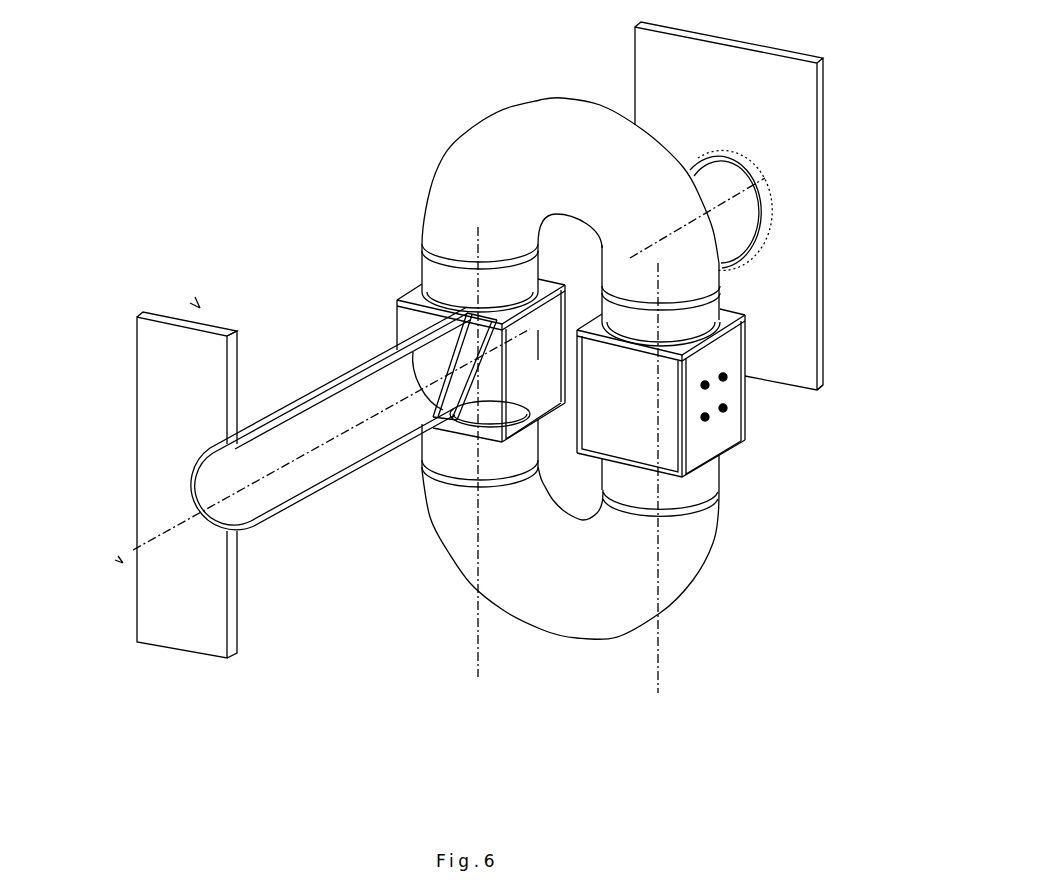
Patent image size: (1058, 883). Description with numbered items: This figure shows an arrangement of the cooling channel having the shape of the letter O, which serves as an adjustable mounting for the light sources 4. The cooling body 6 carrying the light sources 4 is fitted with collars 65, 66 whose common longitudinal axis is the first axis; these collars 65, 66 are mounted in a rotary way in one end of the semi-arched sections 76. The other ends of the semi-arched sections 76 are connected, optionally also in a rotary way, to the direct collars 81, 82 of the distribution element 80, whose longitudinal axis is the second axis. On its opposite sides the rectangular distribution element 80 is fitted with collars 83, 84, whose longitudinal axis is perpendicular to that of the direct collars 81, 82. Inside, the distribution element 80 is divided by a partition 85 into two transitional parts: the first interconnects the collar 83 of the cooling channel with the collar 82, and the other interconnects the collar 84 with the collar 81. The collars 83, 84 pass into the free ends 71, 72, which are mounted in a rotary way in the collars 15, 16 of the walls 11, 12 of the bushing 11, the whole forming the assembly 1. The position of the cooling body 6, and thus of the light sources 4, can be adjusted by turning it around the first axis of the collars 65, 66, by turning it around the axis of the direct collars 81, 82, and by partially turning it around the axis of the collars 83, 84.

The hose assembly 1 is at (200, 308).
The light sources 4 is at (726, 374).
The cooling body 6 is at (818, 373).
The wall of the bushing 11 is at (157, 350).
The wall of the bushing 12 is at (755, 117).
The collar of the wall 15 is at (235, 412).
The collar of the wall 16 is at (765, 178).
The collar of the cooling body 65 is at (693, 483).
The collar of the cooling body 66 is at (705, 308).
The free end 71 is at (290, 507).
The free end 72 is at (735, 235).
The semi-arched section 76 is at (603, 583).
The distribution element 80 is at (397, 298).
The direct collar 81 is at (450, 432).
The direct collar 82 is at (410, 290).
The collar of the distribution element 83 is at (362, 363).
The collar of the distribution element 84 is at (540, 225).
The partition 85 is at (445, 420).